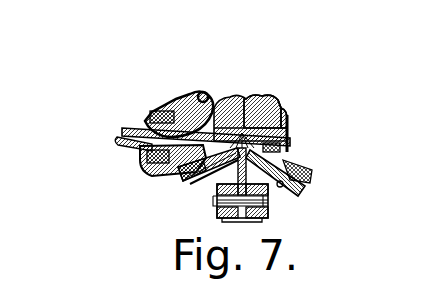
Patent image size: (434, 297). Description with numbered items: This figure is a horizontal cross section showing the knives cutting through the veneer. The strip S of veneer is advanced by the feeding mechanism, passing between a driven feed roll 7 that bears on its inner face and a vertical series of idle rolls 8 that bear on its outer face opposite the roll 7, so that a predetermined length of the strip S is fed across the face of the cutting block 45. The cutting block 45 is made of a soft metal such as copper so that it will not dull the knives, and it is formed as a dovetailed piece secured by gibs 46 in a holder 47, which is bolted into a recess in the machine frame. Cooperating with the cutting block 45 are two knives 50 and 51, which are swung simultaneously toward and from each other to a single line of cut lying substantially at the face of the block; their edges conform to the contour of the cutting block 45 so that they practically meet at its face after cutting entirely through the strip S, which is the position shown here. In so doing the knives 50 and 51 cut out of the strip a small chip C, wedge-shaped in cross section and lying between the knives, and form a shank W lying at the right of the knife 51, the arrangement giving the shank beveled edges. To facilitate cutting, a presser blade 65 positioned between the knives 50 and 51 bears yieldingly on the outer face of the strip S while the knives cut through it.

The driven feed roll 7 is at (149, 118).
The gibs 46 is at (198, 96).
The holder 47 is at (227, 100).
The cutting block 45 is at (257, 100).
The shank W is at (285, 143).
The strip S is at (118, 142).
The idle rolls 8 is at (156, 175).
The knife 50 is at (181, 177).
The chip C is at (201, 195).
The knife 51 is at (300, 163).
The presser blade 65 is at (269, 198).